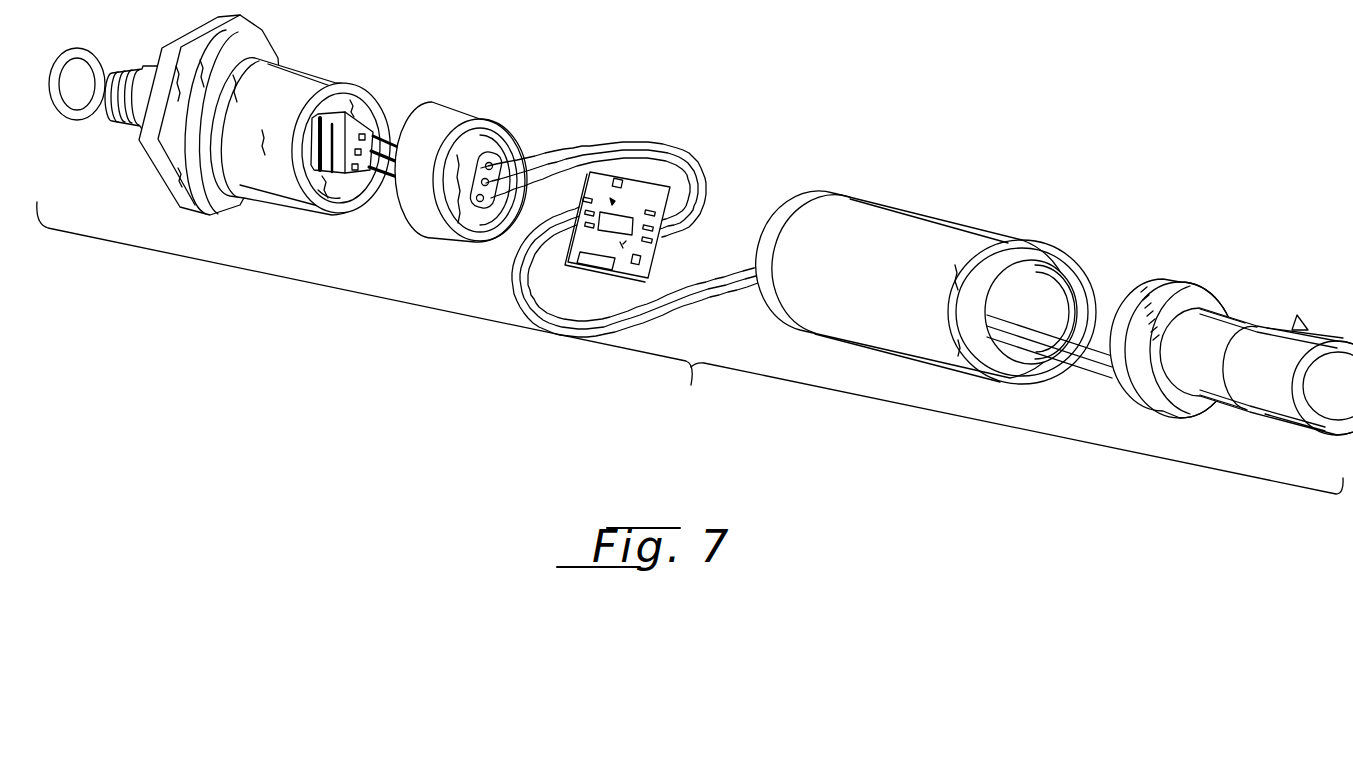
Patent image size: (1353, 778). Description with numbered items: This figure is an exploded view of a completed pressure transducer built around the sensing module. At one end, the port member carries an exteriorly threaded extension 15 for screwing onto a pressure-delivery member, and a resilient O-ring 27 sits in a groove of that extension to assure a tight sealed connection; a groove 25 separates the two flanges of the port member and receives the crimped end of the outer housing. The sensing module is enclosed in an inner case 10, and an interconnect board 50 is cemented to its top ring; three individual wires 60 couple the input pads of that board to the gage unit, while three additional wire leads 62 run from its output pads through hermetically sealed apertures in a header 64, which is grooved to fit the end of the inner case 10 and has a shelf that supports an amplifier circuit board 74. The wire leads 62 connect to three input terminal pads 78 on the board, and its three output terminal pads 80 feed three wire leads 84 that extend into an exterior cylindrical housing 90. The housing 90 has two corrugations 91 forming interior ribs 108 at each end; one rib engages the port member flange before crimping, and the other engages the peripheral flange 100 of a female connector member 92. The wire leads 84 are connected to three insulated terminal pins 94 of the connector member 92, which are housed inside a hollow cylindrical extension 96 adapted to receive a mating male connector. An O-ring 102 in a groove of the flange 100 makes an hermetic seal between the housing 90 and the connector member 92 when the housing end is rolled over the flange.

The inner case 10 is at (310, 61).
The exteriorly threaded extension 15 is at (122, 128).
The groove 25 is at (193, 135).
The resilient O-ring 27 is at (88, 50).
The interconnect board 50 is at (343, 130).
The wires 60 is at (328, 193).
The wire leads 62 is at (404, 145).
The header 64 is at (489, 106).
The amplifier circuit board 74 is at (661, 267).
The input terminal pads 78 is at (657, 212).
The output terminal pads 80 is at (597, 172).
The wire leads 84 is at (577, 330).
The exterior cylindrical housing 90 is at (933, 213).
The corrugations 91 is at (850, 196).
The connector member 92 is at (1251, 314).
The terminal pins 94 is at (1103, 377).
The hollow cylindrical extension 96 is at (1275, 424).
The peripheral flange 100 is at (1194, 405).
The O-ring 102 is at (1186, 278).
The interior ribs 108 is at (1080, 279).